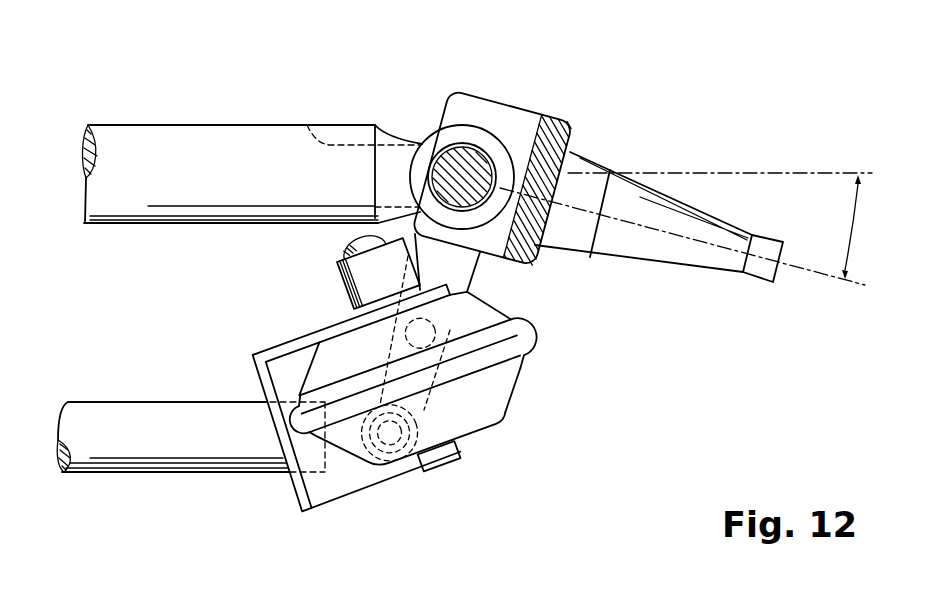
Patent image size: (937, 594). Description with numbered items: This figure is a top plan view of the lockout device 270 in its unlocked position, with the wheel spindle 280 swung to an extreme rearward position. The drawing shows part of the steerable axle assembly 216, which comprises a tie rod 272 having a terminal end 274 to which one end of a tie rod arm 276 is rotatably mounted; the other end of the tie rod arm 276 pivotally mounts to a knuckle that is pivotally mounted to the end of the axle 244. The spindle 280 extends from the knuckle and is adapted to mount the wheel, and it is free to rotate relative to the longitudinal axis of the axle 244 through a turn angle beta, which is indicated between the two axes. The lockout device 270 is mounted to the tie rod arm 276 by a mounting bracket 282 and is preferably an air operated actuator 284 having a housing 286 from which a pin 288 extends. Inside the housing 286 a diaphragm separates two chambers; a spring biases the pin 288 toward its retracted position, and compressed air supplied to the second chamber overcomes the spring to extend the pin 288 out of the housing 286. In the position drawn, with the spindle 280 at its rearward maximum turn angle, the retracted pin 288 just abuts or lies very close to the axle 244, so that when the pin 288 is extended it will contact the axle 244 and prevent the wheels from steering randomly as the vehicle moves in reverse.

The steerable axle assembly 216 is at (203, 122).
The axle 244 is at (297, 124).
The spindle 280 is at (622, 170).
The pin 288 is at (347, 243).
The mounting bracket 282 is at (275, 347).
The lockout device 270 is at (541, 337).
The housing 286 is at (510, 397).
The air operated actuator 284 is at (498, 428).
The terminal end 274 is at (460, 455).
The tie rod arm 276 is at (420, 331).
The tie rod 272 is at (182, 478).